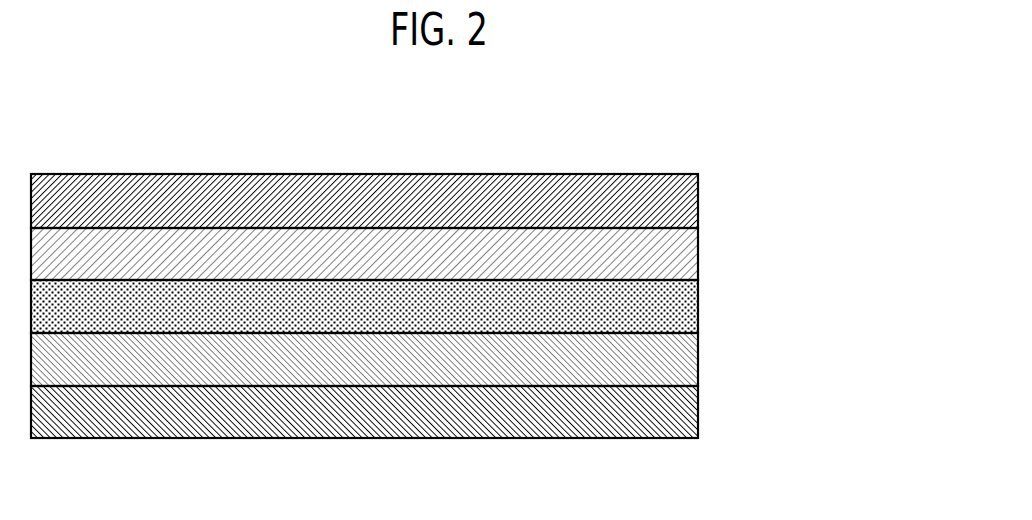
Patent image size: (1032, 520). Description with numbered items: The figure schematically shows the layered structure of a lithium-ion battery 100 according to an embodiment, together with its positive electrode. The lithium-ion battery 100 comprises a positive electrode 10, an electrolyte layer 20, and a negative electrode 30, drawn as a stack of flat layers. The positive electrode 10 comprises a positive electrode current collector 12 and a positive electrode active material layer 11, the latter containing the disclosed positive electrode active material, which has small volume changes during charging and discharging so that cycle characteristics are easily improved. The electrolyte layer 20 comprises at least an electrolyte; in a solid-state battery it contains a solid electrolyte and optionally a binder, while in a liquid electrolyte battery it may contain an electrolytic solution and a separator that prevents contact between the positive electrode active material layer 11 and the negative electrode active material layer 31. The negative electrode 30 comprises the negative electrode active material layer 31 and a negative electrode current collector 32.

The lithium-ion battery 100 is at (395, 106).
The positive electrode 10 is at (474, 227).
The positive electrode current collector 12 is at (698, 200).
The positive electrode active material layer 11 is at (698, 253).
The electrolyte layer 20 is at (698, 309).
The negative electrode 30 is at (474, 388).
The negative electrode active material layer 31 is at (698, 355).
The negative electrode current collector 32 is at (698, 410).